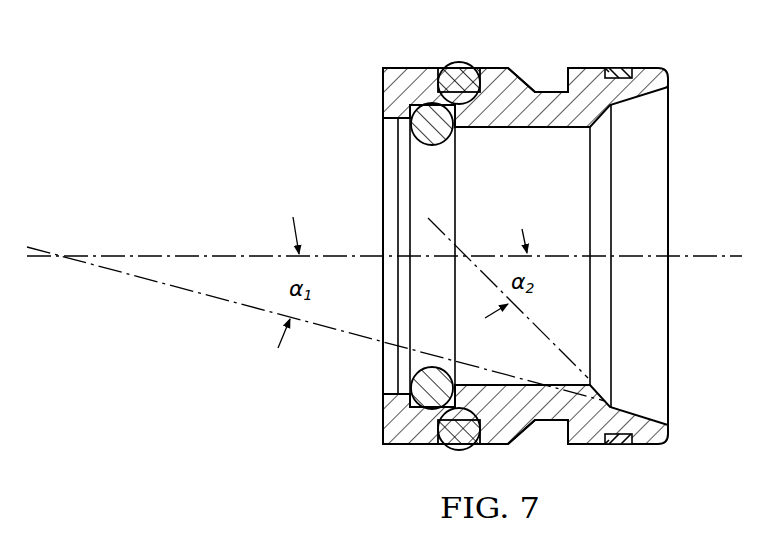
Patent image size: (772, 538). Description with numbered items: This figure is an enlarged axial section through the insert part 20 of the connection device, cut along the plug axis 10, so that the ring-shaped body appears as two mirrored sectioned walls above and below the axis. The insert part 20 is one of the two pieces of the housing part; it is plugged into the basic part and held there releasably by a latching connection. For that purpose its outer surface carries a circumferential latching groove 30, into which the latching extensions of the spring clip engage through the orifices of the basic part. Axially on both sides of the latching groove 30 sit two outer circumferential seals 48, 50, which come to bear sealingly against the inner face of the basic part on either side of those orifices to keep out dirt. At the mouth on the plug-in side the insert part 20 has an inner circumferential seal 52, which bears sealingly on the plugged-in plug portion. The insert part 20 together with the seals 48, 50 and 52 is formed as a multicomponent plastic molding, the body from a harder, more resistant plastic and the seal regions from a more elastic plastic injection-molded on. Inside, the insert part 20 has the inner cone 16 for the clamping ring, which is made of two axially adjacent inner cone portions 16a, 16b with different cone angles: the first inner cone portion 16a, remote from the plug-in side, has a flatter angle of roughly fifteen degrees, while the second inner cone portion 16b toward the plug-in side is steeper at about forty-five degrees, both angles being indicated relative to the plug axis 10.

The plug axis 10 is at (707, 256).
The inner cone 16 is at (640, 160).
The first inner cone portion 16a is at (638, 312).
The second inner cone portion 16b is at (592, 330).
The insert part 20 is at (402, 447).
The circumferential latching groove 30 is at (550, 92).
The outer circumferential seal 48 is at (470, 63).
The outer circumferential seal 50 is at (624, 68).
The inner circumferential seal 52 is at (428, 128).